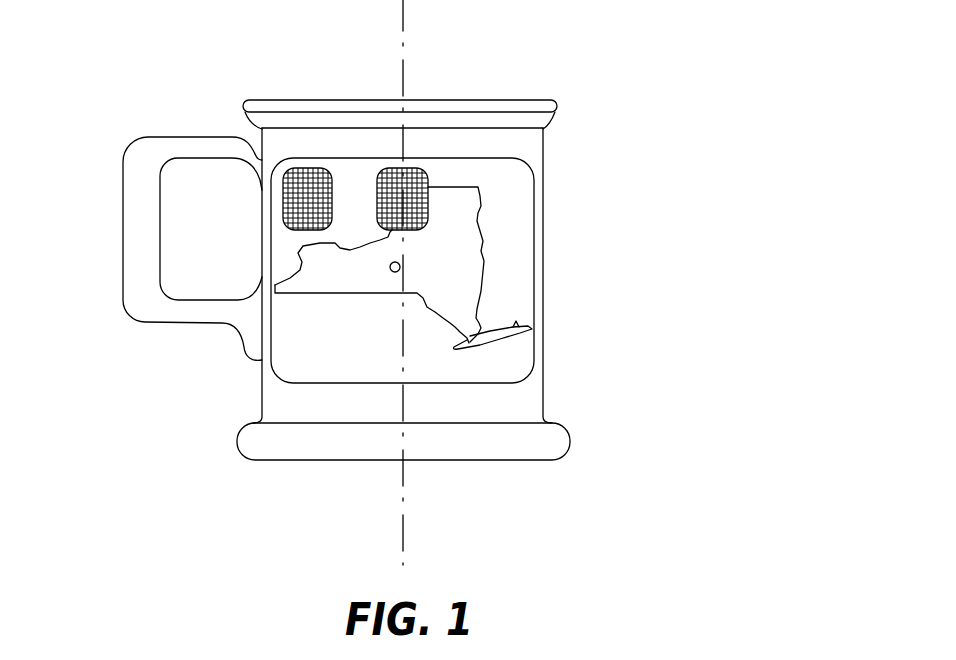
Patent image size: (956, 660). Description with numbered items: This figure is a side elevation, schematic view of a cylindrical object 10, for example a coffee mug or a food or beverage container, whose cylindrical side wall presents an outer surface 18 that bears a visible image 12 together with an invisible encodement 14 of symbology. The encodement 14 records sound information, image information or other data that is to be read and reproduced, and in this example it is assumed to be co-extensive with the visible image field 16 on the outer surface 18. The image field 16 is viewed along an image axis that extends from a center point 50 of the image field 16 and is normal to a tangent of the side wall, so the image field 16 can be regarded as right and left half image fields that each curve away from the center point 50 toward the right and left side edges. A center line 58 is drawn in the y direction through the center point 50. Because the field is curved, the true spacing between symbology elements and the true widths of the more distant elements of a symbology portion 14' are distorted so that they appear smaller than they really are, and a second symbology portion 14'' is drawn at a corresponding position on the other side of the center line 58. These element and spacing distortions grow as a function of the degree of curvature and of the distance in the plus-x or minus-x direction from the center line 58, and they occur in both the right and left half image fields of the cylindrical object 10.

The cylindrical object 10 is at (76, 454).
The visible image 12 is at (482, 298).
The invisible encodement 14 is at (406, 222).
The symbology portion 14' is at (290, 146).
The second grid display panel 14'' is at (381, 146).
The image field 16 is at (505, 150).
The cylindrical outer surface 18 is at (545, 402).
The center point 50 is at (389, 269).
The center line 58 is at (412, 62).